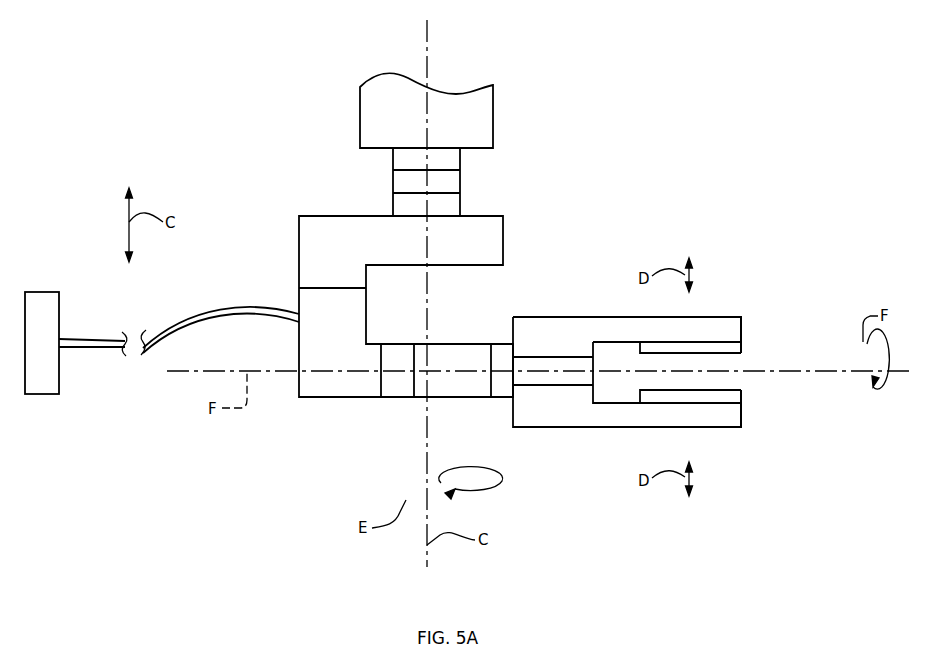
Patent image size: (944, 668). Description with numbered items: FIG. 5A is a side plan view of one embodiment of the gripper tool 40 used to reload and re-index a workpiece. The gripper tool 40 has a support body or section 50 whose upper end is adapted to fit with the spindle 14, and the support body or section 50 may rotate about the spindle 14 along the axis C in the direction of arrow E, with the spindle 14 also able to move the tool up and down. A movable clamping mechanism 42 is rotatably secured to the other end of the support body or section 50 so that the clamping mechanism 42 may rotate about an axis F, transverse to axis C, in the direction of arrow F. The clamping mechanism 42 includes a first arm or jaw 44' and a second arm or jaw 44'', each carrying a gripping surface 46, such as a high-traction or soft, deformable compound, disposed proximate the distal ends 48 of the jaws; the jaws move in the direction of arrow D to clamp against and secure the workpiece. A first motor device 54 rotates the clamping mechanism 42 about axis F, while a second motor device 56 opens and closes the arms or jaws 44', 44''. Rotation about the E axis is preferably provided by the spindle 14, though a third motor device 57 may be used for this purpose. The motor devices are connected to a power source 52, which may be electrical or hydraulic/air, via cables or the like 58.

The spindle 14 is at (493, 117).
The gripper tool 40 is at (583, 185).
The clamping mechanism 42 is at (711, 218).
The first arm or jaw 44' is at (643, 312).
The second arm or jaw 44'' is at (644, 433).
The gripping surface 46 is at (741, 348).
The distal ends 48 is at (750, 327).
The support body or section 50 is at (283, 284).
The power source 52 is at (40, 394).
The first motor device 54 is at (400, 398).
The second motor device 56 is at (497, 343).
The third motor device 57 is at (460, 181).
The cables 58 is at (197, 325).